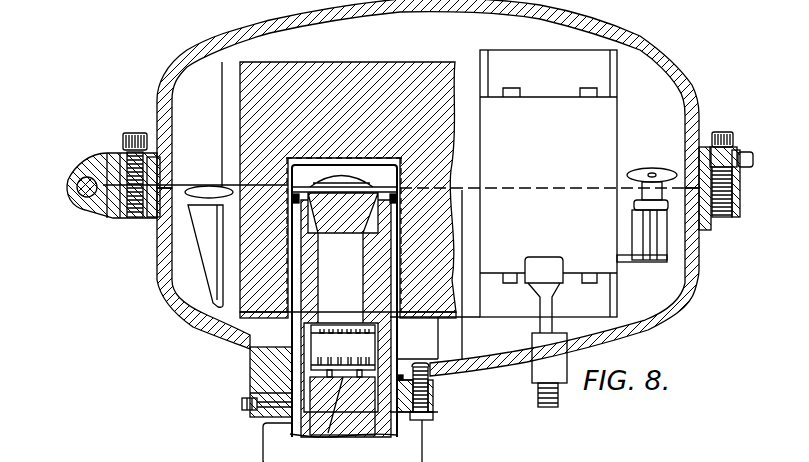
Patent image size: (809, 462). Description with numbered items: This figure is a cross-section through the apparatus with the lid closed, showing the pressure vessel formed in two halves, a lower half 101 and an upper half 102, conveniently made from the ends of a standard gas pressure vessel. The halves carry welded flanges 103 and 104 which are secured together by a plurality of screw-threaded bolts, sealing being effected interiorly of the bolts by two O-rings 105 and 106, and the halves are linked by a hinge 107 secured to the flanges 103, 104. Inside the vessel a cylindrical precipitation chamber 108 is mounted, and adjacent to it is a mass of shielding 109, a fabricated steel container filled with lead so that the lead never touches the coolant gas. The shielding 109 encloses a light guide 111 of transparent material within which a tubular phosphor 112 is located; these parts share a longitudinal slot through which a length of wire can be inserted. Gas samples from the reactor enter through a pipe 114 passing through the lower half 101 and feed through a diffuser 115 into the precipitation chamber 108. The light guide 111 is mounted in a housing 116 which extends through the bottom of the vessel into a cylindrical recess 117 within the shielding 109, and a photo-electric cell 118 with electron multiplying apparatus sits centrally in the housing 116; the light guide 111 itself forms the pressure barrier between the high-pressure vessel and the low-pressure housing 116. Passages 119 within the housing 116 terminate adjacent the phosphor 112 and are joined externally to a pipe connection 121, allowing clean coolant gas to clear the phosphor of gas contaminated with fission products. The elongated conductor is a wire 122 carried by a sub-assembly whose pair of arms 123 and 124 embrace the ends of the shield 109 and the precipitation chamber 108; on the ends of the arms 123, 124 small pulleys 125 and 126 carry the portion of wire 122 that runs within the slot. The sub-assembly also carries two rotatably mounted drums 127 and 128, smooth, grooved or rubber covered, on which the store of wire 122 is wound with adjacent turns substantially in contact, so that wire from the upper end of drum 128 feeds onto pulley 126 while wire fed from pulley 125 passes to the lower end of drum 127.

The lower half of pressure vessel 101 is at (682, 300).
The upper half of pressure vessel 102 is at (683, 68).
The welded flange 103 is at (733, 202).
The welded flange 104 is at (737, 175).
The O-ring 105 is at (717, 213).
The O-ring 106 is at (703, 222).
The hinge 107 is at (83, 200).
The cylindrical precipitation chamber 108 is at (608, 122).
The shielding 109 is at (386, 62).
The light guide 111 is at (350, 205).
The tubular phosphor 112 is at (336, 215).
The pipe 114 is at (538, 368).
The diffuser 115 is at (542, 292).
The housing 116 is at (290, 310).
The cylindrical recess 117 is at (408, 245).
The photo-electric cell 118 is at (396, 319).
The passages 119 is at (305, 265).
The pipe connection 121 is at (247, 408).
The wire 122 is at (625, 183).
The arm 123 is at (658, 248).
The arm 124 is at (207, 250).
The pulley 125 is at (197, 187).
The pulley 126 is at (652, 168).
The drum 127 is at (436, 457).
The drum 128 is at (402, 442).